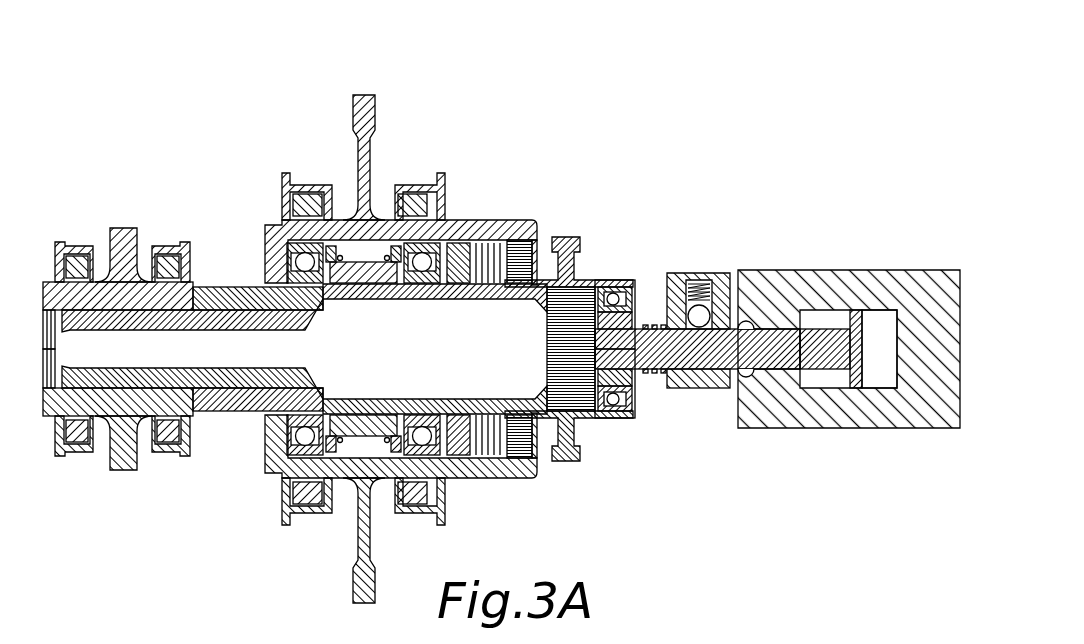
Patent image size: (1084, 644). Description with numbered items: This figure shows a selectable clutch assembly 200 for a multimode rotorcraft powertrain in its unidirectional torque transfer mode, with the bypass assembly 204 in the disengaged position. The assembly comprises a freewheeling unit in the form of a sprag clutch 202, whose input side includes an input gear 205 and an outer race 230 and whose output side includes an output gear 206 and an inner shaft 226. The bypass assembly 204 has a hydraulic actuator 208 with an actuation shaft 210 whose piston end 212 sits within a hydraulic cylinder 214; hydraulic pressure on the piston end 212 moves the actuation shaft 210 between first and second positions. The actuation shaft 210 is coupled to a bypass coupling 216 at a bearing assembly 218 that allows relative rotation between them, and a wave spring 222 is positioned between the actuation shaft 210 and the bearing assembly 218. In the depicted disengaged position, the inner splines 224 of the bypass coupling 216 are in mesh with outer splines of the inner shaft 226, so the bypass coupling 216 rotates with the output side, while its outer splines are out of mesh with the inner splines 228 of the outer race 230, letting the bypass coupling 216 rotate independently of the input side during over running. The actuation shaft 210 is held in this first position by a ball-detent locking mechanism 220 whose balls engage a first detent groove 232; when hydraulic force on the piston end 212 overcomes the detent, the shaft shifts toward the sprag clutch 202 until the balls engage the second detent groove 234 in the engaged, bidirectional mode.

The selectable clutch assembly 200 is at (641, 170).
The sprag clutch 202 is at (267, 217).
The bypass assembly 204 is at (763, 265).
The input gear 205 is at (364, 94).
The output gear 206 is at (122, 231).
The hydraulic actuator 208 is at (793, 410).
The actuation shaft 210 is at (801, 311).
The piston end 212 is at (856, 315).
The hydraulic cylinder 214 is at (913, 410).
The bypass coupling 216 is at (568, 236).
The bearing assembly 218 is at (632, 281).
The ball-detent locking mechanism 220 is at (700, 272).
The wave spring 222 is at (657, 375).
The inner splines 224 is at (585, 398).
The inner shaft 226 is at (486, 403).
The inner splines 228 is at (542, 231).
The outer race 230 is at (455, 228).
The first detent groove 232 is at (700, 390).
The second detent groove 234 is at (748, 390).